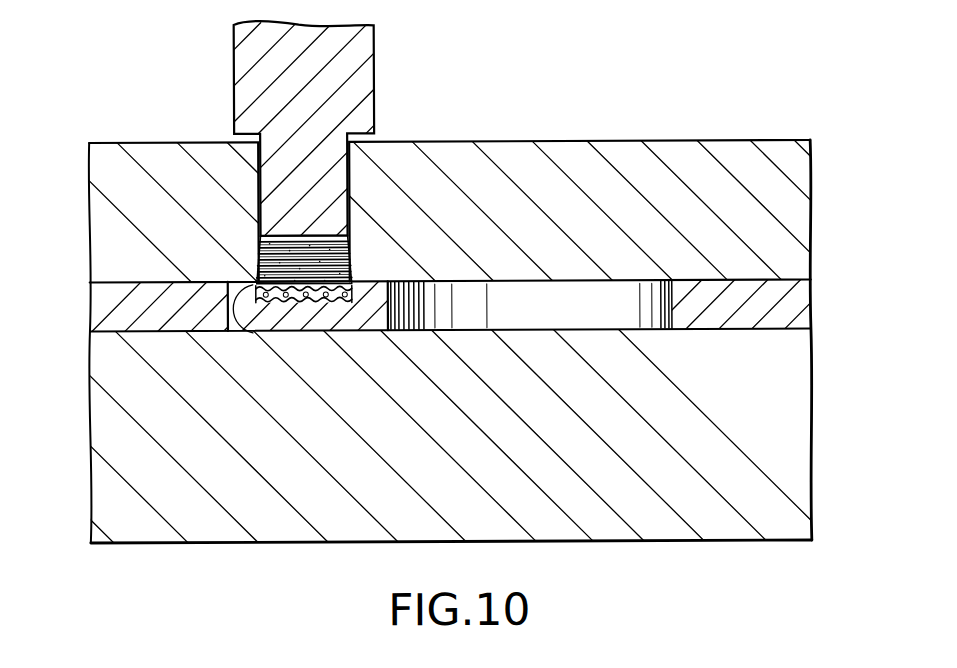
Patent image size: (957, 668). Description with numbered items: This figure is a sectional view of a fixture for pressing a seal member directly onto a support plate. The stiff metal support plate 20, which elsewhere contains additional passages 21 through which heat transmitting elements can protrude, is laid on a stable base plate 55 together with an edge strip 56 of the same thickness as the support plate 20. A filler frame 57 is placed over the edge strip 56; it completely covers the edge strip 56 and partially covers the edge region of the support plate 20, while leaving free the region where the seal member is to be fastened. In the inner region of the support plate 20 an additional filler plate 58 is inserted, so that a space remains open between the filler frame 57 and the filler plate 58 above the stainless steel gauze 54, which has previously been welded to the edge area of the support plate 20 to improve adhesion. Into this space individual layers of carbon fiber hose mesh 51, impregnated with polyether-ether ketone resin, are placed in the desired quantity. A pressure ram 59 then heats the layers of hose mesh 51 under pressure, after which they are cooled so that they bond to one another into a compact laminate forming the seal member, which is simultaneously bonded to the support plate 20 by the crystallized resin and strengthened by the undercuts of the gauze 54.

The pressure ram 59 is at (250, 38).
The filler frame 57 is at (155, 155).
The filler plate 58 is at (787, 155).
The carbon fiber hose mesh 51 is at (330, 252).
The stainless steel gauze 54 is at (302, 302).
The edge strip 56 is at (120, 313).
The support plate 20 is at (795, 309).
The additional passages 21 is at (597, 315).
The base plate 55 is at (567, 528).